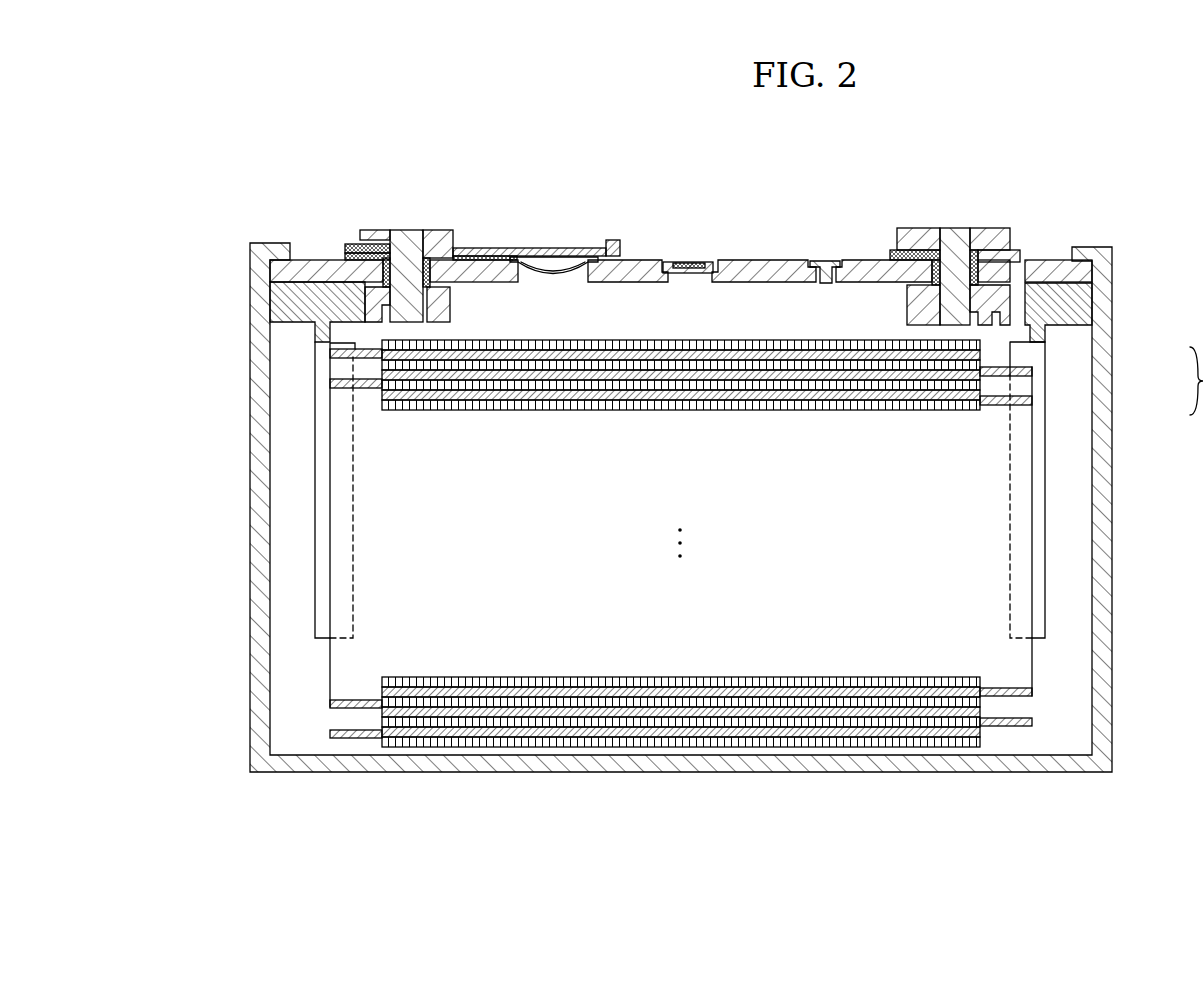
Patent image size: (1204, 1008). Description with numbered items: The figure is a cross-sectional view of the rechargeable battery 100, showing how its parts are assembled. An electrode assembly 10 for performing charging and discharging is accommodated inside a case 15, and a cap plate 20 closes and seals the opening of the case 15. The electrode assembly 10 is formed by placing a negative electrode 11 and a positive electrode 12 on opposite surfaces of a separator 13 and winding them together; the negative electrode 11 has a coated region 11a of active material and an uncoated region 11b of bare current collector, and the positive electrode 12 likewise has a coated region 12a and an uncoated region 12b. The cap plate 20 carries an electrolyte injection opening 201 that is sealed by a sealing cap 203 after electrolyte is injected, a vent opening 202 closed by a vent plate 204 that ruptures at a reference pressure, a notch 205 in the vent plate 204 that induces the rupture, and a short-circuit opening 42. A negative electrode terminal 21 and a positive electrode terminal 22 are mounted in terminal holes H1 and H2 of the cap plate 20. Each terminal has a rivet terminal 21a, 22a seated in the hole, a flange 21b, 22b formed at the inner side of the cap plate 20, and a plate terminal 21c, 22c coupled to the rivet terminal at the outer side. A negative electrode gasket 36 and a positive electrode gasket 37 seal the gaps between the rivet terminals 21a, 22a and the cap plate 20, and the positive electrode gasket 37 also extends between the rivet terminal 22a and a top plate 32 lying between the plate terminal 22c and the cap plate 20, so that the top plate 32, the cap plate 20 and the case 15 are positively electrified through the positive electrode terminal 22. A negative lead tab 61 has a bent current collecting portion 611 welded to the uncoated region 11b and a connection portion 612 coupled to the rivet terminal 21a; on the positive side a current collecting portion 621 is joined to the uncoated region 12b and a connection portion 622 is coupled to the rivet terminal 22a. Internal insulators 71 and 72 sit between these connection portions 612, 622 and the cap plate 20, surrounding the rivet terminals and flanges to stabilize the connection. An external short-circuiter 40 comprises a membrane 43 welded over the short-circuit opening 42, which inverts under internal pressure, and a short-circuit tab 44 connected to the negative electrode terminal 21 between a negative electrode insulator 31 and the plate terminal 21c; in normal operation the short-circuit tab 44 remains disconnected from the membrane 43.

The rechargeable battery 100 is at (687, 139).
The electrode assembly 10 is at (681, 591).
The negative electrode 11 is at (413, 608).
The coated region 11a is at (478, 786).
The uncoated region 11b is at (352, 740).
The positive electrode 12 is at (964, 618).
The coated region 12a is at (910, 774).
The uncoated region 12b is at (1012, 728).
The separator 13 is at (627, 712).
The case 15 is at (1106, 522).
The cap plate 20 is at (770, 268).
The electrolyte injection opening 201 is at (827, 341).
The vent opening 202 is at (696, 337).
The sealing cap 203 is at (827, 265).
The vent plate 204 is at (696, 233).
The notch 205 is at (688, 265).
The negative electrode terminal 21 is at (429, 307).
The rivet terminal 21a is at (410, 324).
The flange 21b is at (440, 266).
The plate terminal 21c is at (440, 243).
The positive electrode terminal 22 is at (1031, 317).
The rivet terminal 22a is at (1000, 290).
The flange 22b is at (925, 327).
The plate terminal 22c is at (1000, 240).
The negative electrode insulator 31 is at (610, 247).
The top plate 32 is at (1018, 250).
The negative electrode gasket 36 is at (345, 253).
The positive electrode gasket 37 is at (926, 258).
The external short-circuiter 40 is at (564, 322).
The short-circuit opening 42 is at (573, 276).
The membrane 43 is at (545, 276).
The short-circuit tab 44 is at (352, 246).
The negative lead tab 61 is at (242, 521).
The current collecting portion 611 is at (320, 412).
The connection portion 612 is at (316, 336).
The current collecting portion 621 is at (1040, 410).
The connection portion 622 is at (1045, 330).
The internal insulator 71 is at (282, 297).
The internal insulator 72 is at (1045, 305).
The terminal hole H1 is at (387, 262).
The terminal hole H2 is at (975, 260).